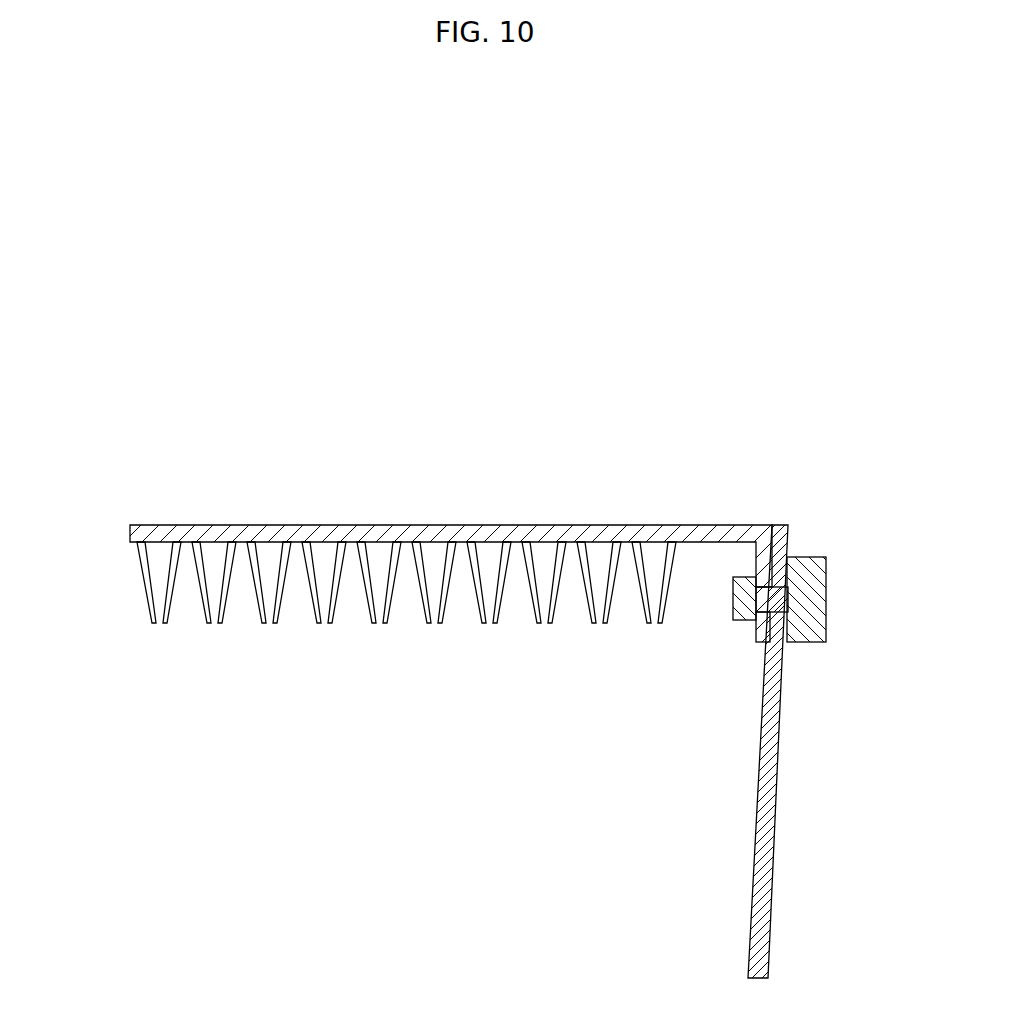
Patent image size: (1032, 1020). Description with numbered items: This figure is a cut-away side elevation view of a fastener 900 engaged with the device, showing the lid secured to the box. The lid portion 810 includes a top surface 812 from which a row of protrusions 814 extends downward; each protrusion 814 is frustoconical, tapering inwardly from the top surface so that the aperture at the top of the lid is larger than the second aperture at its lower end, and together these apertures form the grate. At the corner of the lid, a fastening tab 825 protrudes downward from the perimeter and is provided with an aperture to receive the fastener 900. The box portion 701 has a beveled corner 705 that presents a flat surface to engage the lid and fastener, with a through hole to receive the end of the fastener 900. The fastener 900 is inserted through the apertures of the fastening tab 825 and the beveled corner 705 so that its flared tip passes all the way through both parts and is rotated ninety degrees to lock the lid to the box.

The rake head assembly 810 is at (394, 544).
The rake head plate 812 is at (482, 532).
The protrusion 814 is at (130, 580).
The fastener 900 is at (842, 545).
The fastening tab 825 is at (750, 628).
The beveled corner 705 is at (767, 780).
The handle assembly 701 is at (842, 751).